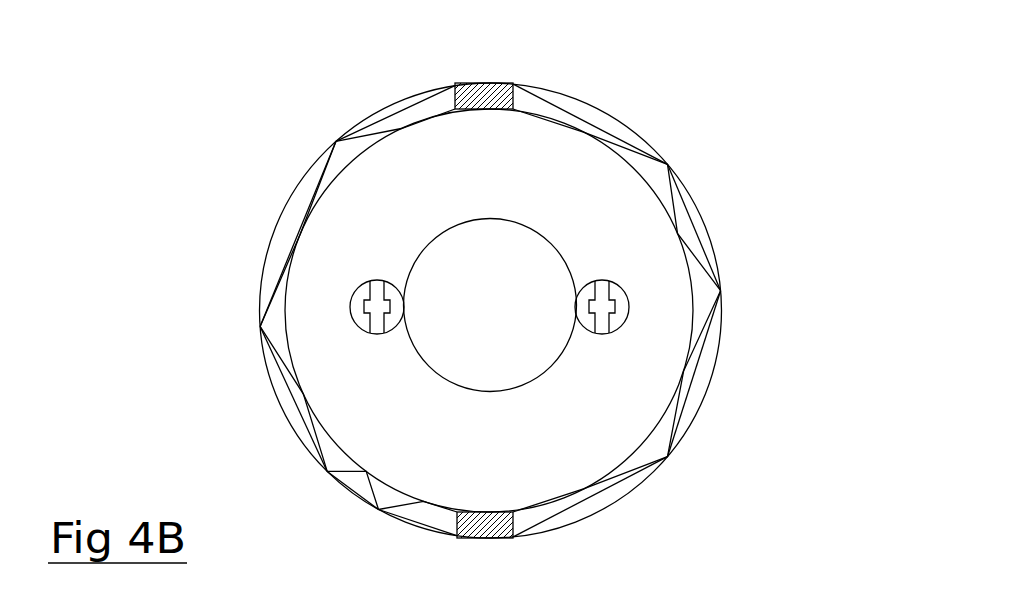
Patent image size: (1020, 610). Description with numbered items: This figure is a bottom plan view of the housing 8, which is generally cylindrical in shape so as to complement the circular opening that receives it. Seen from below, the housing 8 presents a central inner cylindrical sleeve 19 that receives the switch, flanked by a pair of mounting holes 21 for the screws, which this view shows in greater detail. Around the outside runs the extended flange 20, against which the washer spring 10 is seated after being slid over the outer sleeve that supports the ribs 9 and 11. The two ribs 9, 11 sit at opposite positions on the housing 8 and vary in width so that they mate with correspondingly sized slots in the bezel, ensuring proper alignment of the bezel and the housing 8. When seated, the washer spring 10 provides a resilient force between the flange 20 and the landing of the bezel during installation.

The housing 8 is at (733, 329).
The rib 9 is at (498, 82).
The washer spring 10 is at (672, 197).
The rib 11 is at (499, 539).
The inner cylindrical sleeve 19 is at (546, 238).
The flange 20 is at (392, 512).
The mounting holes 21 is at (362, 311).